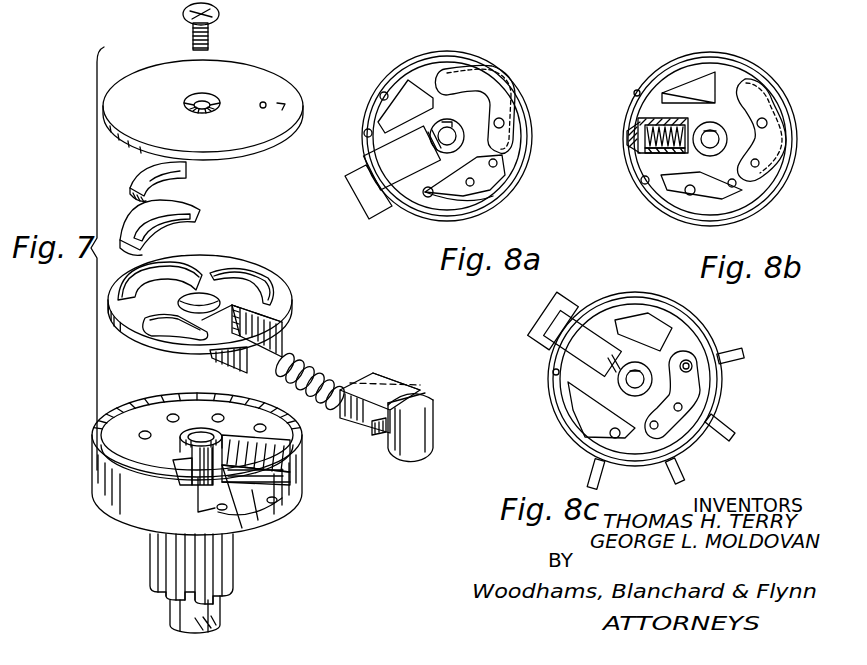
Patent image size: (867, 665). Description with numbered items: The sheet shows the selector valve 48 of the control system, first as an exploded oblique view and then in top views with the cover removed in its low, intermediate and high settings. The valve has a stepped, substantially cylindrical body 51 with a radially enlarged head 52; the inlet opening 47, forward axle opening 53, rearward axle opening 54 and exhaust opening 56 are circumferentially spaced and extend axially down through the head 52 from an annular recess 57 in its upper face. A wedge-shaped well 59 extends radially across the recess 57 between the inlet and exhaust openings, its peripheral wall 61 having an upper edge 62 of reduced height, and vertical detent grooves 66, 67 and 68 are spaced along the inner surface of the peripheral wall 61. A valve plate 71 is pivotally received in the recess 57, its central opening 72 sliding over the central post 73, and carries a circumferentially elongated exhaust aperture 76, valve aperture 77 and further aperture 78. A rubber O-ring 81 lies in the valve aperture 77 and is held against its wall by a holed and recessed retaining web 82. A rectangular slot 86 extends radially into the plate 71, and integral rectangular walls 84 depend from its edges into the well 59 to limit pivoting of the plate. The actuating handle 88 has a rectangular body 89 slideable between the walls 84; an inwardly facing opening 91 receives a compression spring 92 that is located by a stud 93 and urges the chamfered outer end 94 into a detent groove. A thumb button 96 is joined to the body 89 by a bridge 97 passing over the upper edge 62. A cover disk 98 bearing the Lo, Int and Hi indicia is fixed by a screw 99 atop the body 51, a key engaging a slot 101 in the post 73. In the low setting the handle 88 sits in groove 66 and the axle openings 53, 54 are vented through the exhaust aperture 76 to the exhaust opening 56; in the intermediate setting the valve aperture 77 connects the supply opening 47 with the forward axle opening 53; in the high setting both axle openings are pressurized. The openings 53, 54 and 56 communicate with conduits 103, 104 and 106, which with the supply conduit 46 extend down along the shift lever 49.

In FIG. 8C, the supply conduit 46 is at (745, 353).
In FIG. 7, the inlet opening 47 is at (141, 437).
In FIG. 8A, the inlet opening 47 is at (503, 120).
In FIG. 8B, the inlet opening 47 is at (765, 120).
In FIG. 8C, the inlet opening 47 is at (692, 364).
In FIG. 7, the selector valve 48 is at (112, 553).
In FIG. 8A, the selector valve 48 is at (440, 42).
In FIG. 7, the shift lever 49 is at (210, 615).
In FIG. 7, the body 51 is at (250, 557).
In FIG. 7, the head 52 is at (205, 461).
In FIG. 7, the forward axle opening 53 is at (173, 414).
In FIG. 8A, the forward axle opening 53 is at (497, 163).
In FIG. 8B, the forward axle opening 53 is at (759, 163).
In FIG. 8C, the forward axle opening 53 is at (682, 407).
In FIG. 7, the rearward axle opening 54 is at (220, 414).
In FIG. 8A, the rearward axle opening 54 is at (474, 182).
In FIG. 8B, the rearward axle opening 54 is at (735, 186).
In FIG. 8C, the rearward axle opening 54 is at (658, 427).
In FIG. 7, the exhaust opening 56 is at (263, 424).
In FIG. 8A, the exhaust opening 56 is at (429, 197).
In FIG. 8B, the exhaust opening 56 is at (687, 194).
In FIG. 8C, the exhaust opening 56 is at (610, 434).
In FIG. 7, the annular recess 57 is at (197, 381).
In FIG. 7, the well 59 is at (280, 455).
In FIG. 7, the peripheral wall 61 is at (305, 493).
In FIG. 7, the upper edge 62 is at (293, 500).
In FIG. 7, the detent groove 66 is at (293, 473).
In FIG. 8B, the detent groove 66 is at (642, 183).
In FIG. 7, the detent groove 67 is at (276, 503).
In FIG. 8A, the detent groove 67 is at (364, 133).
In FIG. 7, the detent groove 68 is at (225, 510).
In FIG. 8A, the detent groove 68 is at (380, 96).
In FIG. 7, the valve plate 71 is at (231, 301).
In FIG. 7, the central opening 72 is at (178, 300).
In FIG. 7, the central post 73 is at (181, 452).
In FIG. 7, the exhaust aperture 76 is at (213, 317).
In FIG. 8A, the exhaust aperture 76 is at (495, 197).
In FIG. 8C, the exhaust aperture 76 is at (588, 420).
In FIG. 7, the valve aperture 77 is at (175, 258).
In FIG. 8A, the valve aperture 77 is at (500, 85).
In FIG. 7, the further aperture 78 is at (162, 336).
In FIG. 7, the O-ring 81 is at (195, 213).
In FIG. 8A, the O-ring 81 is at (470, 72).
In FIG. 7, the retaining web 82 is at (189, 175).
In FIG. 7, the rectangular walls 84 is at (263, 348).
In FIG. 7, the rectangular slot 86 is at (283, 322).
In FIG. 7, the actuating handle 88 is at (410, 408).
In FIG. 8A, the actuating handle 88 is at (340, 173).
In FIG. 7, the body 89 is at (363, 383).
In FIG. 8B, the opening 91 is at (663, 152).
In FIG. 7, the compression spring 92 is at (325, 377).
In FIG. 8B, the compression spring 92 is at (655, 120).
In FIG. 7, the stud 93 is at (253, 283).
In FIG. 7, the outer end 94 is at (376, 436).
In FIG. 8B, the outer end 94 is at (630, 142).
In FIG. 7, the thumb button 96 is at (420, 430).
In FIG. 7, the bridge 97 is at (400, 398).
In FIG. 7, the cover disk 98 is at (254, 78).
In FIG. 7, the screw 99 is at (190, 41).
In FIG. 7, the slot 101 is at (260, 510).
In FIG. 8C, the conduit 103 is at (733, 435).
In FIG. 8C, the conduit 104 is at (683, 480).
In FIG. 8C, the conduit 106 is at (590, 482).